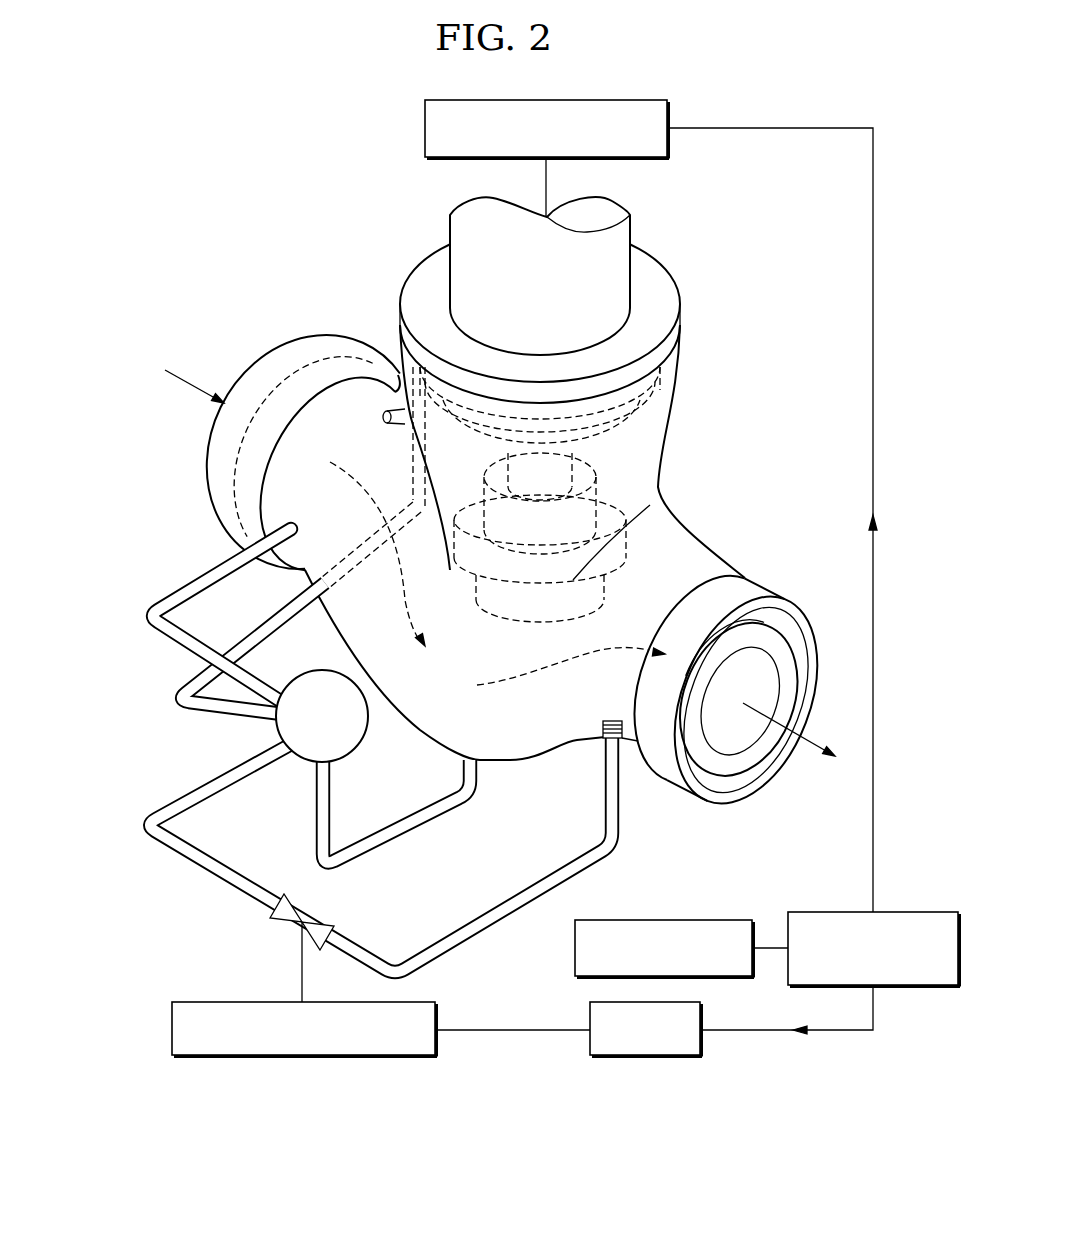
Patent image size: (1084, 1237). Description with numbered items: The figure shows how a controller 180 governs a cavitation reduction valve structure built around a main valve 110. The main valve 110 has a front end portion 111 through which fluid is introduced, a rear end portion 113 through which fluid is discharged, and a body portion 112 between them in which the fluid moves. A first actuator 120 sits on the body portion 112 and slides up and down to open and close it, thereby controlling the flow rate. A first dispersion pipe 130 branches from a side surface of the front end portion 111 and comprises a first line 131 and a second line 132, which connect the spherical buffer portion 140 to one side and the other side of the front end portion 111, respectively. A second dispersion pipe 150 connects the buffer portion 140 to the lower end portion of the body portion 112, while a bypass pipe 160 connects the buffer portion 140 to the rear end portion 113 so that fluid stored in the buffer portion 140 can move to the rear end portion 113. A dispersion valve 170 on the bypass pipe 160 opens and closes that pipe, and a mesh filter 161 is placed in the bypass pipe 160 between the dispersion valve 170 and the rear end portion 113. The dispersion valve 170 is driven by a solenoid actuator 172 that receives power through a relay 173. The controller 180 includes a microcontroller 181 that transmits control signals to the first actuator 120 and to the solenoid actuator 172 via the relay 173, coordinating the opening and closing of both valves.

The main valve 110 is at (505, 516).
The front end portion 111 is at (268, 365).
The body portion 112 is at (497, 760).
The rear end portion 113 is at (730, 745).
The first actuator 120 is at (425, 127).
The first dispersion pipe 130 is at (233, 614).
The first line 131 is at (167, 633).
The second line 132 is at (175, 700).
The buffer portion 140 is at (352, 743).
The second dispersion pipe 150 is at (407, 830).
The bypass pipe 160 is at (195, 863).
The mesh filter 161 is at (603, 742).
The dispersion valve 170 is at (272, 942).
The solenoid actuator 172 is at (302, 1057).
The relay 173 is at (647, 1057).
The controller 180 is at (663, 920).
The microcontroller 181 is at (928, 912).